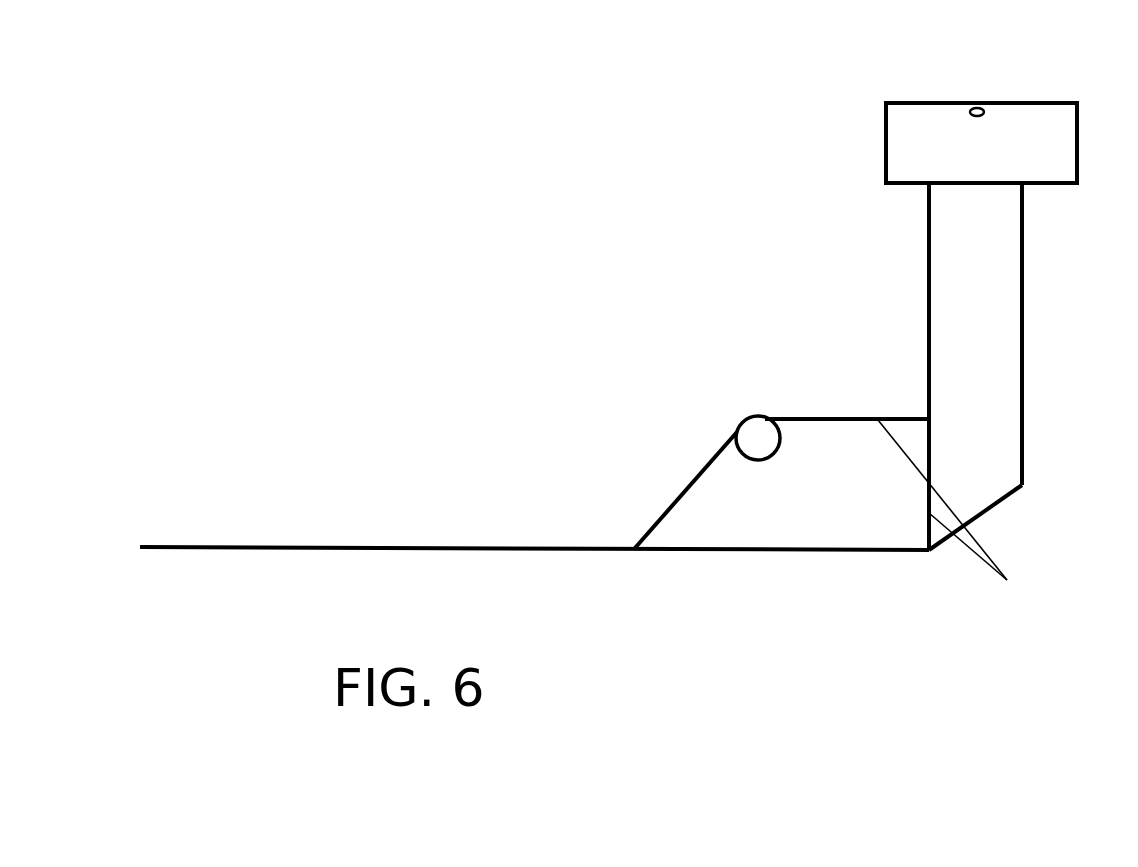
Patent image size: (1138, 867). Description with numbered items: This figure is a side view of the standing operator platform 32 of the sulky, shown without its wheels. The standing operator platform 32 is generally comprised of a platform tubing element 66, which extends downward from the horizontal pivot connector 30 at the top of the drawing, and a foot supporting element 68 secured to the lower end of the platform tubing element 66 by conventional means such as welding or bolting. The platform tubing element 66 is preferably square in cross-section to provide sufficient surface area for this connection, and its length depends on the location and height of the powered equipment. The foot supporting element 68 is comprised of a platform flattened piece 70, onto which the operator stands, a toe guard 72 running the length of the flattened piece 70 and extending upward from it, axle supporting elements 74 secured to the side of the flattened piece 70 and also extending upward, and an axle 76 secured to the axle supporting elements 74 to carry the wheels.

The horizontal pivot connector 30 is at (900, 118).
The standing operator platform 32 is at (722, 351).
The platform tubing element 66 is at (993, 317).
The foot supporting element 68 is at (290, 557).
The platform flattened piece 70 is at (480, 548).
The toe guard 72 is at (960, 518).
The axle supporting elements 74 is at (764, 520).
The axle 76 is at (755, 437).